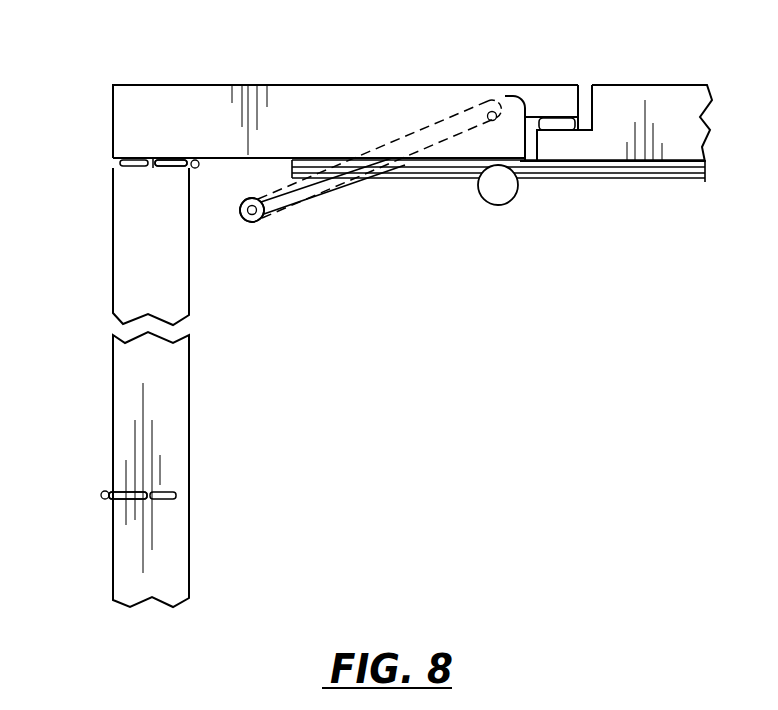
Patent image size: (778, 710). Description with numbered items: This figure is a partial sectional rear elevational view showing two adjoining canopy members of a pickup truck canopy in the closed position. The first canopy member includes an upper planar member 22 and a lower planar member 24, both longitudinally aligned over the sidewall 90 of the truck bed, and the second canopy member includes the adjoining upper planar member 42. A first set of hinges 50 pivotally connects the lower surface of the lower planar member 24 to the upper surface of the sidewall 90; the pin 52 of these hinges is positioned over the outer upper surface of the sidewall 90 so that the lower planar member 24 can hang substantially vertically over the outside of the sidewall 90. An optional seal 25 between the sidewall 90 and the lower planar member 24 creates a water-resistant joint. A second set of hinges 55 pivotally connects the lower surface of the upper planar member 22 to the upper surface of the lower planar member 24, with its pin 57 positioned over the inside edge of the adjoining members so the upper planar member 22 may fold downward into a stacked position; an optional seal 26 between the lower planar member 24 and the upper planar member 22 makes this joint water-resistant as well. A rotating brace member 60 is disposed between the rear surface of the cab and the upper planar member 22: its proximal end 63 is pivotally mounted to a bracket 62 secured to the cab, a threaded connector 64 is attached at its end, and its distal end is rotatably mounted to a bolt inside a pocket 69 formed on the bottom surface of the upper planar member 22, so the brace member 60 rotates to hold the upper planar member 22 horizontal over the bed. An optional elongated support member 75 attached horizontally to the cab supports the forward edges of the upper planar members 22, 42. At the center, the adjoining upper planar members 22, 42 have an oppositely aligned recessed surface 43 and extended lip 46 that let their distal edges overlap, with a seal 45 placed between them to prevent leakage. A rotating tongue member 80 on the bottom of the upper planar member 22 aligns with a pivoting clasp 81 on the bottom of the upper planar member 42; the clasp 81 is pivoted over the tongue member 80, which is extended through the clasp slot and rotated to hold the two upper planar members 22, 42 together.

The upper planar member 22 is at (348, 85).
The lower planar member 24 is at (132, 273).
The seal 25 is at (180, 497).
The seal 26 is at (121, 163).
The upper planar member 42 is at (638, 84).
The recessed surface 43 is at (586, 100).
The seal 45 is at (553, 117).
The extended lip 46 is at (572, 145).
The first set of hinges 50 is at (120, 488).
The pin 52 is at (103, 498).
The second set of hinges 55 is at (160, 167).
The pin 57 is at (199, 166).
The rotating brace member 60 is at (332, 191).
The bracket 62 is at (253, 225).
The proximal end 63 is at (263, 212).
The threaded connector 64 is at (482, 118).
The pocket 69 is at (448, 114).
The elongated support member 75 is at (683, 178).
The rotating tongue member 80 is at (499, 207).
The pivoting clasp 81 is at (545, 170).
The sidewall 90 is at (170, 567).